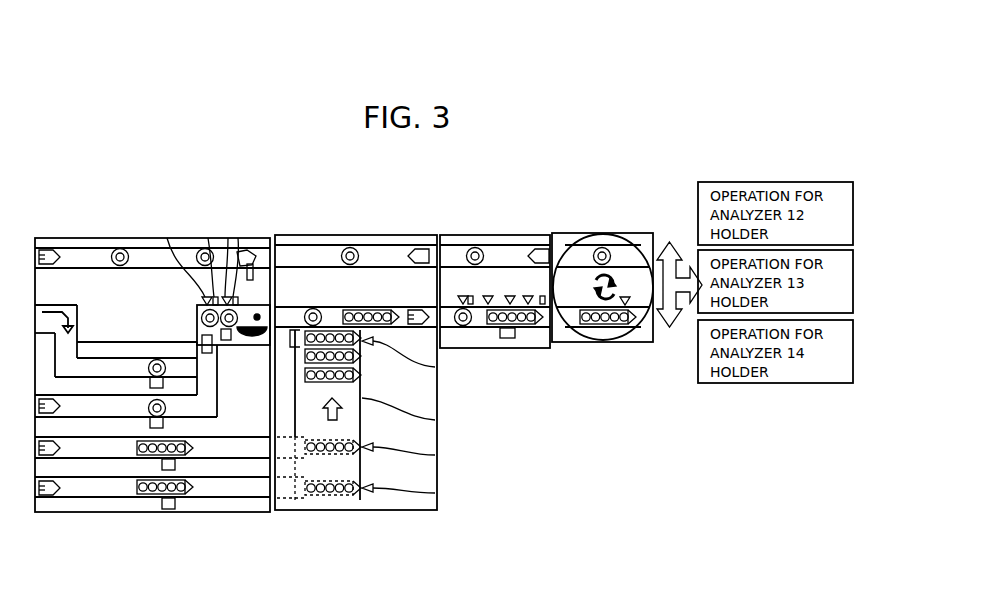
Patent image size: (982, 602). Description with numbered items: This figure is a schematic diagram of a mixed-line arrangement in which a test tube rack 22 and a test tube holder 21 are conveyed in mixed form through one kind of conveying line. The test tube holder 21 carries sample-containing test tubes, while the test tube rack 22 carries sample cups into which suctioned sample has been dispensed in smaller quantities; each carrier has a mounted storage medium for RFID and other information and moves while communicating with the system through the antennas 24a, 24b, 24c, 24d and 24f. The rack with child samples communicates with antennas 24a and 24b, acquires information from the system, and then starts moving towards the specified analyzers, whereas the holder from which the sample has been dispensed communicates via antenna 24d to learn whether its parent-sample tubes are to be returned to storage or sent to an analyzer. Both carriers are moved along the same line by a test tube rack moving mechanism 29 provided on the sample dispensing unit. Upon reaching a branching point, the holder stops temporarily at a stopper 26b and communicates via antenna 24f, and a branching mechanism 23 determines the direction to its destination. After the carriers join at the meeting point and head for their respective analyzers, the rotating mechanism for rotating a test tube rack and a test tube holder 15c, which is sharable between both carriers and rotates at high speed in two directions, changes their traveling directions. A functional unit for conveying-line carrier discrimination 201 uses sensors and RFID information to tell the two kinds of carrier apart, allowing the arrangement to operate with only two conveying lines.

The test tube holder 21 is at (118, 240).
The test tube rack 22 is at (142, 500).
The branching mechanism 23 is at (260, 314).
The stopper 26b is at (252, 256).
The antenna 24a is at (171, 511).
The antenna 24b is at (182, 466).
The antenna 24c is at (150, 430).
The antenna 24d is at (163, 390).
The antenna 24f is at (214, 352).
The test tube rack moving mechanism 29 is at (435, 422).
The functional unit for conveying-line carrier discrimination 201 is at (493, 339).
The rotating mechanism for rotating a test tube rack and a test tube holder 15c is at (576, 342).